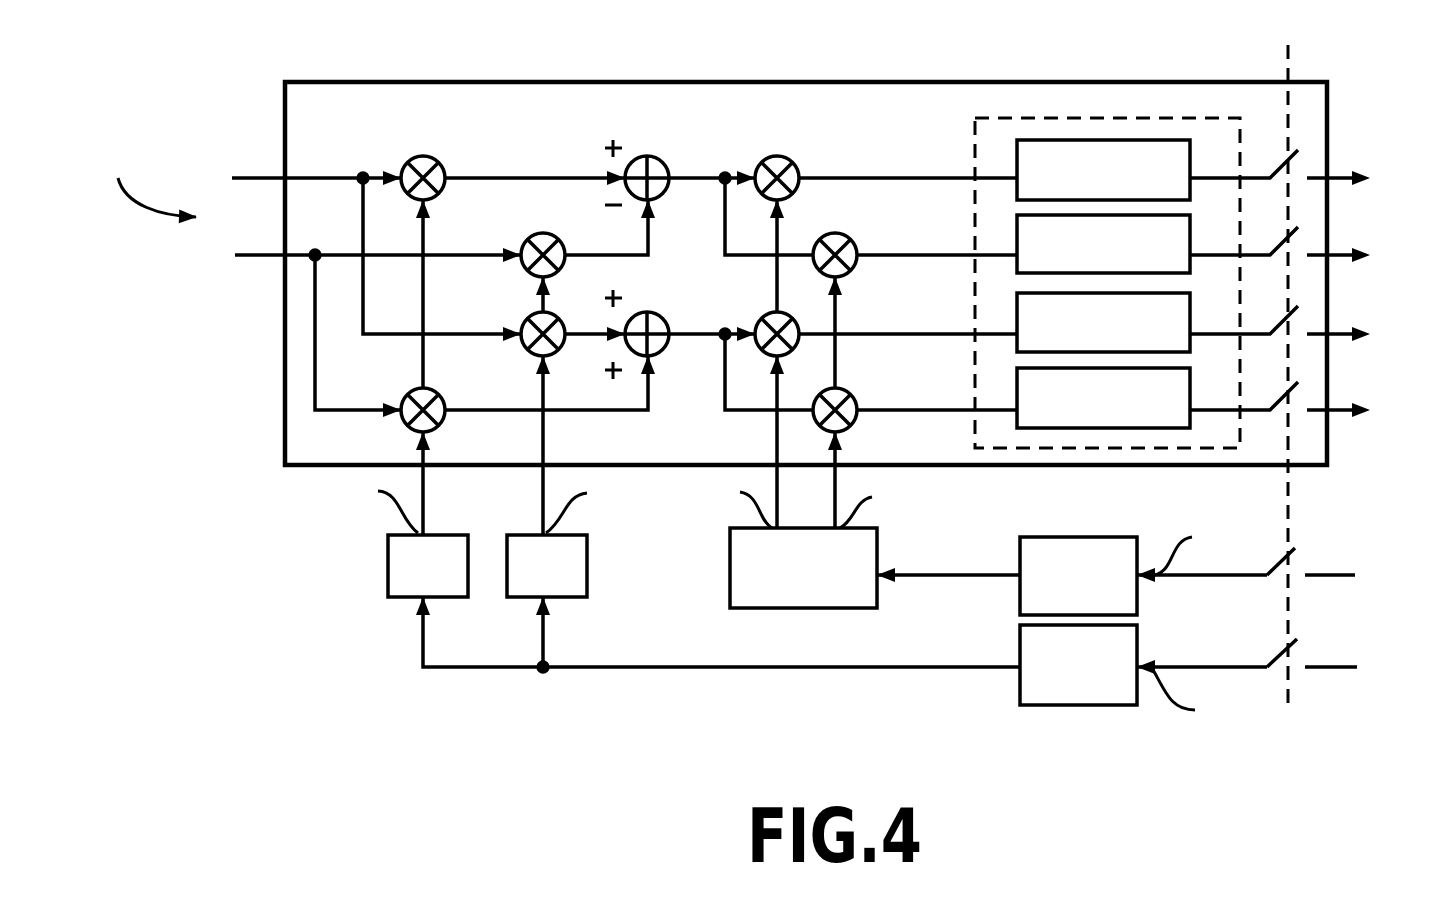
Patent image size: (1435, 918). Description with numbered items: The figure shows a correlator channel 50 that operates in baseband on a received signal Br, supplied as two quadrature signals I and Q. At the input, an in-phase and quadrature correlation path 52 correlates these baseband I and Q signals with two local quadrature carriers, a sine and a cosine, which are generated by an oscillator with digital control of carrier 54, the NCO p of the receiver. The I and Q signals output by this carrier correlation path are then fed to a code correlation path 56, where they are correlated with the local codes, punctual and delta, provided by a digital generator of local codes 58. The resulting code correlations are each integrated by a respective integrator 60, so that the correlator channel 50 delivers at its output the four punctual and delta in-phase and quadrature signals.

The correlator channel 50 is at (822, 82).
The in-phase and quadrature correlation path 52 is at (548, 158).
The oscillator with digital control of carrier 54 is at (1075, 705).
The code correlation path 56 is at (874, 156).
The digital generator of local codes 58 is at (1087, 537).
The integrator 60 is at (1150, 118).